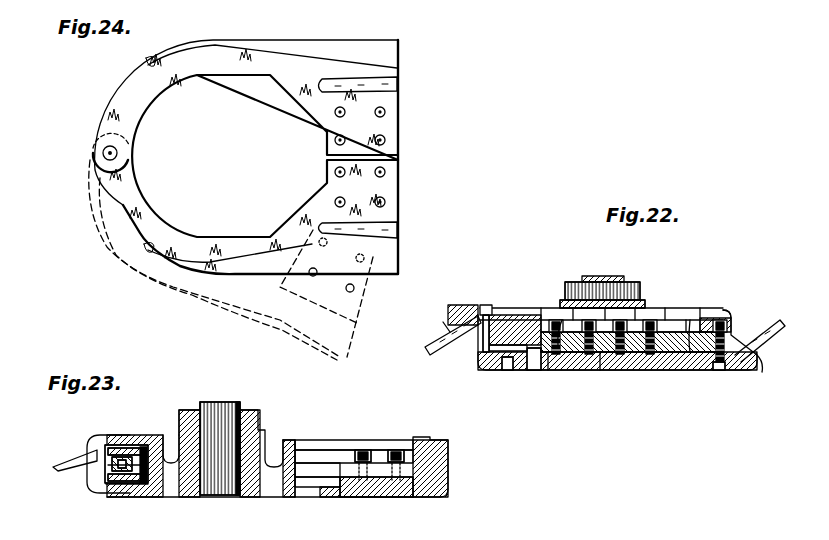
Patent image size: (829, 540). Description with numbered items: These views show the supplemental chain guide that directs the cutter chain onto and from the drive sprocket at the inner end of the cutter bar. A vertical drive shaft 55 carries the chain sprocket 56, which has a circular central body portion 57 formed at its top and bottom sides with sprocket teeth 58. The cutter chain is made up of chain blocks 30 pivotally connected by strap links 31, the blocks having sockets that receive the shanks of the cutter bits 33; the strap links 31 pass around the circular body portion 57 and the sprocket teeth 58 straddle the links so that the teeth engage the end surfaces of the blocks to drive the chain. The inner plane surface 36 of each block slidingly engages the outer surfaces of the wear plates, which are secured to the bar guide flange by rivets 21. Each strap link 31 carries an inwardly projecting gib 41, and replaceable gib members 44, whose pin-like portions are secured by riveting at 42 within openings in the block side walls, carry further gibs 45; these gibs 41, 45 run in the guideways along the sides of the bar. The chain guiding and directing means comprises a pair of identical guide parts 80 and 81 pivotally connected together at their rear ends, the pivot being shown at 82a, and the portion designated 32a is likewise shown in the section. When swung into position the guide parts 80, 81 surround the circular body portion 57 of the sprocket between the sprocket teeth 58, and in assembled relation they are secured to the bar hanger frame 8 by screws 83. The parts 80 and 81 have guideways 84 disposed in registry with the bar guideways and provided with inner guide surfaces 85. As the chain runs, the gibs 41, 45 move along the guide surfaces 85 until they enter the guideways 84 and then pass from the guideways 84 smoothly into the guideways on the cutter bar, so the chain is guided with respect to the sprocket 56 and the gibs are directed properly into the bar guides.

In FIG. 22, the bar hanger frame 8 is at (615, 372).
In FIG. 23, the bar hanger frame 8 is at (450, 494).
In FIG. 23, the rivets 21 is at (132, 470).
In FIG. 22, the chain blocks 30 is at (468, 305).
In FIG. 23, the chain blocks 30 is at (92, 442).
In FIG. 23, the strap links 31 is at (116, 449).
In FIG. 22, the arm 32a is at (448, 323).
In FIG. 22, the cutter bits 33 is at (440, 347).
In FIG. 23, the cutter bits 33 is at (62, 468).
In FIG. 22, the inner plane surface 36 is at (738, 324).
In FIG. 23, the gibs 41 is at (138, 486).
In FIG. 22, the riveting securement 42 is at (535, 312).
In FIG. 22, the replaceable gib members 44 is at (505, 317).
In FIG. 22, the gibs 45 is at (548, 332).
In FIG. 22, the vertical drive shaft 55 is at (604, 280).
In FIG. 23, the vertical drive shaft 55 is at (222, 408).
In FIG. 22, the chain sprocket 56 is at (600, 370).
In FIG. 23, the chain sprocket 56 is at (178, 477).
In FIG. 23, the circular central body portion 57 is at (275, 447).
In FIG. 22, the sprocket teeth 58 is at (555, 364).
In FIG. 23, the sprocket teeth 58 is at (122, 457).
In FIG. 24, the guide part 80 is at (318, 40).
In FIG. 22, the guide part 80 is at (652, 368).
In FIG. 23, the guide part 80 is at (386, 484).
In FIG. 24, the guide part 81 is at (275, 273).
In FIG. 22, the guide part 81 is at (486, 350).
In FIG. 23, the guide part 81 is at (96, 478).
In FIG. 24, the pivot pin 82a is at (104, 153).
In FIG. 23, the pivot pin 82a is at (120, 488).
In FIG. 22, the screws 83 is at (650, 320).
In FIG. 23, the screws 83 is at (394, 452).
In FIG. 24, the guideways 84 is at (390, 78).
In FIG. 22, the guideways 84 is at (558, 322).
In FIG. 24, the inner guide surfaces 85 is at (256, 58).